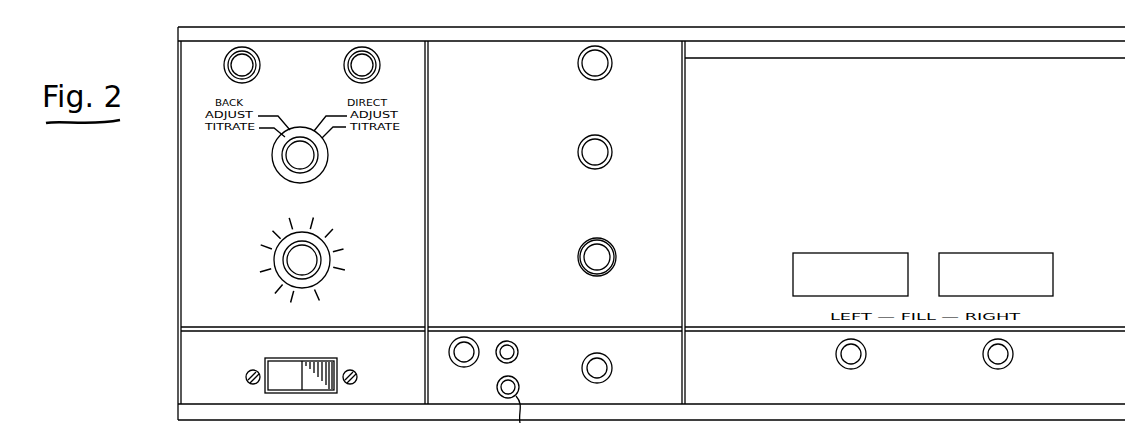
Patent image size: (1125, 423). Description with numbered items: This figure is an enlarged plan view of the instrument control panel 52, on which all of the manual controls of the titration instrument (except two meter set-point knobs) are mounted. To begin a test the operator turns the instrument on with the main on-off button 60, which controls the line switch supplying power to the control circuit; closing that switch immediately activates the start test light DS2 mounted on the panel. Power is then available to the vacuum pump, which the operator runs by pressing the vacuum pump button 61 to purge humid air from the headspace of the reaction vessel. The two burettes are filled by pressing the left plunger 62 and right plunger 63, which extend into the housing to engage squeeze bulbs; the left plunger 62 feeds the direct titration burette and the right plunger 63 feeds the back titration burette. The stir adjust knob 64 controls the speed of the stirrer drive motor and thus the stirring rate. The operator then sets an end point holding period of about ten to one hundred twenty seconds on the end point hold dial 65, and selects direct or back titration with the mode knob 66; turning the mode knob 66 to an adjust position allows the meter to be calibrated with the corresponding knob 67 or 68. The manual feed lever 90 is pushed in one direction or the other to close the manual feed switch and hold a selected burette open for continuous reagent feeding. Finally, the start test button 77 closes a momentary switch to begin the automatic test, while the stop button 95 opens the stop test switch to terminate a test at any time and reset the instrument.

The control panel 52 is at (166, 270).
The main on-off button 60 is at (337, 390).
The vacuum pump button 61 is at (578, 63).
The left plunger 62 is at (853, 253).
The right plunger 63 is at (992, 253).
The stir adjust knob 64 is at (608, 244).
The end point hold dial 65 is at (325, 242).
The mode knob 66 is at (326, 160).
The calibration knob 67 is at (258, 71).
The calibration knob 68 is at (378, 70).
The start test button 77 is at (460, 337).
The manual feed lever 90 is at (612, 146).
The stop button 95 is at (608, 378).
The start test light DS2 is at (504, 340).